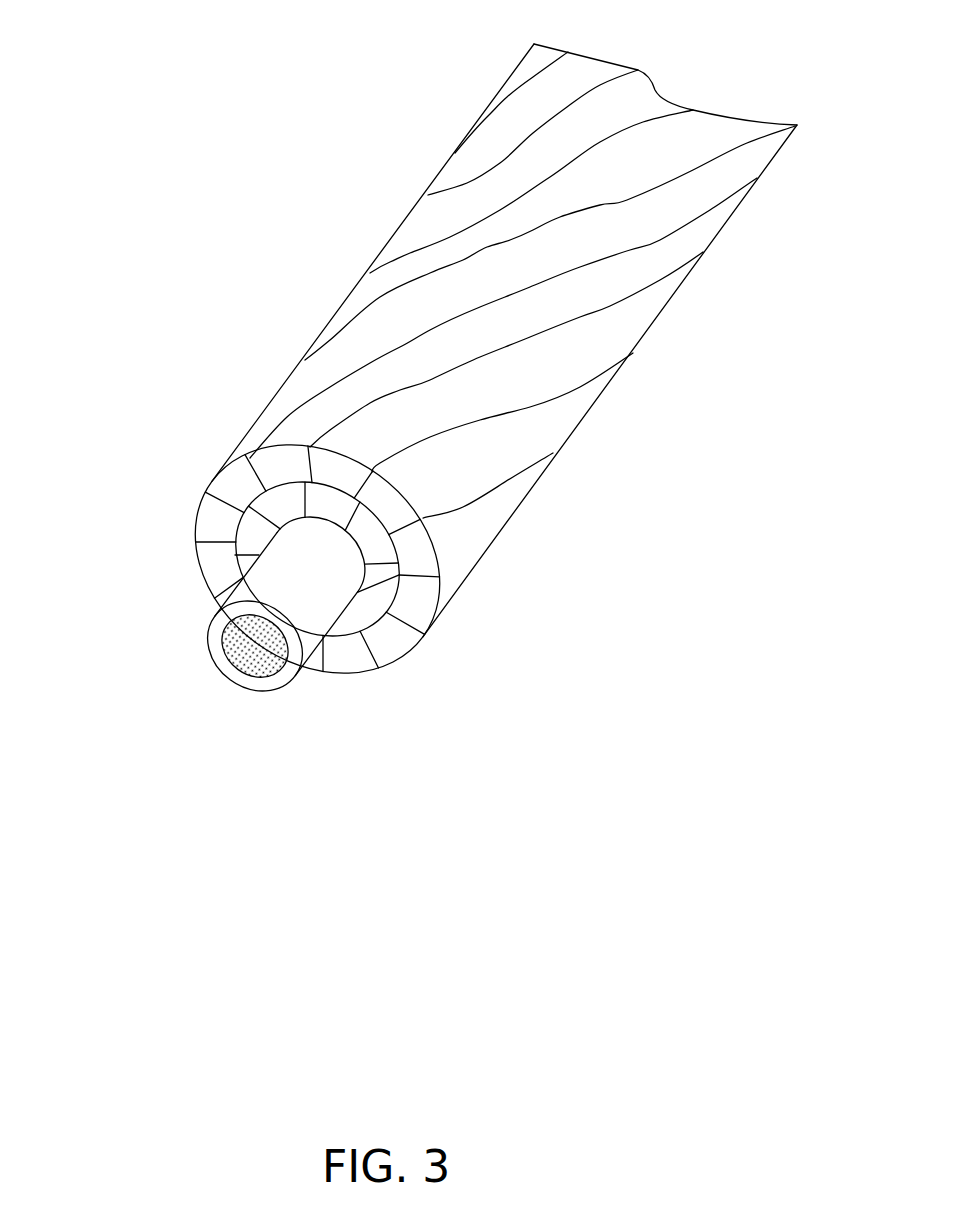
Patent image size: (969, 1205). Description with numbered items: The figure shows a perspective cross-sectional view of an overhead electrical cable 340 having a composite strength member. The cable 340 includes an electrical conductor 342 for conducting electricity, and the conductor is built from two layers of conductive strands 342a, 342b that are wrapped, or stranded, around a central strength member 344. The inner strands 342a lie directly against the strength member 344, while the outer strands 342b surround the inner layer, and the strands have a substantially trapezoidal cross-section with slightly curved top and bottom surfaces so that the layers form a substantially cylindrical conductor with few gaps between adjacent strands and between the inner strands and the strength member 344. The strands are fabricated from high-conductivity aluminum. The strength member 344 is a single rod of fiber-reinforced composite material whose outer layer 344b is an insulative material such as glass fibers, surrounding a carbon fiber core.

The overhead electrical cable 340 is at (382, 180).
The electrical conductor 342 is at (300, 352).
The conductive strands (inner layer) 342a is at (382, 590).
The conductive strands (outer layer) 342b is at (418, 553).
The central strength member 344 is at (222, 690).
The outer layer of insulative material 344b is at (262, 585).